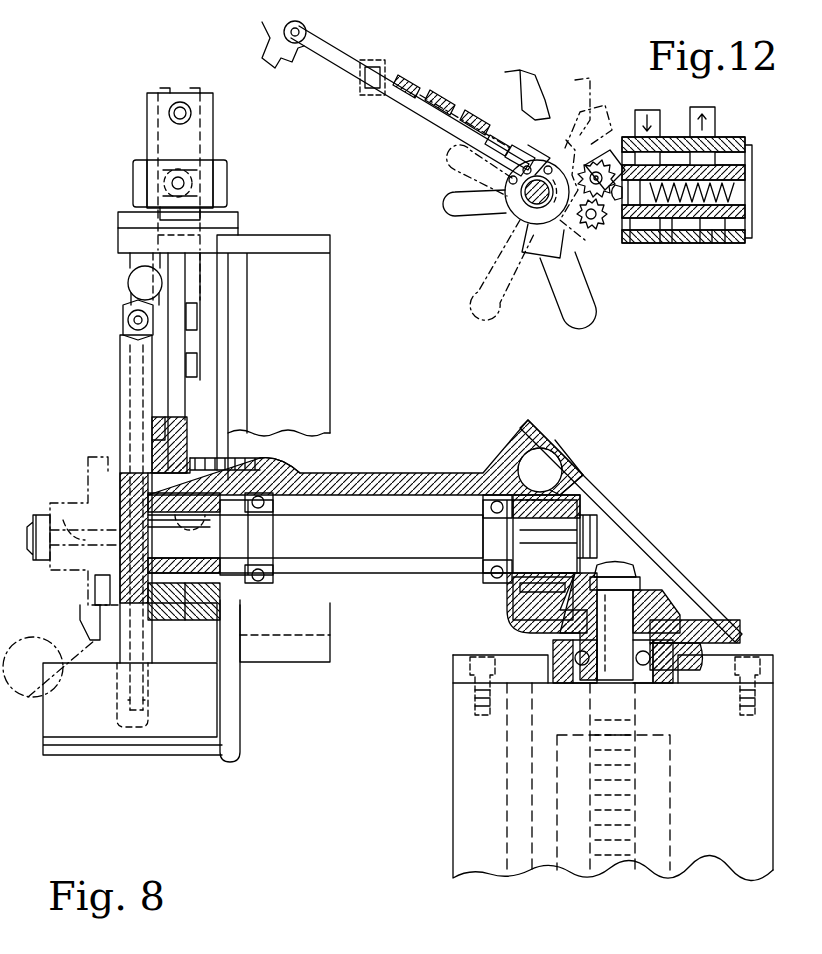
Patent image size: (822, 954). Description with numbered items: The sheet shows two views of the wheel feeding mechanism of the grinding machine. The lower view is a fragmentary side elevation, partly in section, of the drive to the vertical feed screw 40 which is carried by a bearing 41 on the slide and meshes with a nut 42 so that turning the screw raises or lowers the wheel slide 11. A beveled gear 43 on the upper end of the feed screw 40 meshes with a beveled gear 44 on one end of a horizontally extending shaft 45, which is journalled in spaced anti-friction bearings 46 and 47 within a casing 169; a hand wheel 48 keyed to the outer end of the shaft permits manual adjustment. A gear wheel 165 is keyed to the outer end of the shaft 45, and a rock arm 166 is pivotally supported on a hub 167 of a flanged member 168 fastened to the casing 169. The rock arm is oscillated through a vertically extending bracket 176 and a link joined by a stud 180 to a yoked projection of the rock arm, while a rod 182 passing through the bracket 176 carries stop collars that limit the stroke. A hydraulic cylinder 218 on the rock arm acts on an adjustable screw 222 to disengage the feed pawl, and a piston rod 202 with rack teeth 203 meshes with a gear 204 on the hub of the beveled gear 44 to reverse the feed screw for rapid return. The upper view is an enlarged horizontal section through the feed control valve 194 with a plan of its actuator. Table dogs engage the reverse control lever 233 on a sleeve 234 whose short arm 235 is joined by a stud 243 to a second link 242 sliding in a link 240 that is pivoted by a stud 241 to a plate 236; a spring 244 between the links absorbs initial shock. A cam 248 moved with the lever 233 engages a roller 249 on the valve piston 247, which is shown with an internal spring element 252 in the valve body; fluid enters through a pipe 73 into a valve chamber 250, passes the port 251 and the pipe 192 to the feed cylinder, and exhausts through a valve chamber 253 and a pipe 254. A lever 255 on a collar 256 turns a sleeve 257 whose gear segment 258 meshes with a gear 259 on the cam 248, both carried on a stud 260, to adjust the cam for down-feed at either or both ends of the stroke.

In FIG. 8, the wheel slide 11 is at (725, 870).
In FIG. 8, the feed screw 40 is at (635, 722).
In FIG. 8, the bearing 41 is at (568, 680).
In FIG. 8, the nut 42 is at (680, 855).
In FIG. 8, the beveled gear 43 is at (650, 590).
In FIG. 8, the beveled gear 44 is at (578, 500).
In FIG. 8, the shaft 45 is at (440, 522).
In FIG. 8, the anti-friction bearing 46 is at (262, 470).
In FIG. 8, the anti-friction bearing 47 is at (490, 500).
In FIG. 8, the hand wheel 48 is at (88, 490).
In FIG. 8, the gear wheel 165 is at (125, 420).
In FIG. 8, the rock arm 166 is at (170, 400).
In FIG. 8, the hub 167 is at (178, 622).
In FIG. 8, the flanged member 168 is at (212, 640).
In FIG. 8, the casing 169 is at (370, 605).
In FIG. 8, the bracket 176 is at (160, 125).
In FIG. 8, the stud 180 is at (165, 170).
In FIG. 8, the rod 182 is at (180, 102).
In FIG. 8, the piston rod 202 is at (532, 470).
In FIG. 8, the rack teeth 203 is at (518, 495).
In FIG. 8, the gear 204 is at (537, 592).
In FIG. 8, the hydraulic cylinder 218 is at (130, 305).
In FIG. 8, the adjustable screw 222 is at (125, 336).
In FIG. 12, the reverse control lever 233 is at (510, 75).
In FIG. 12, the sleeve 234 is at (520, 205).
In FIG. 12, the short arm 235 is at (545, 152).
In FIG. 12, the plate 236 is at (290, 62).
In FIG. 12, the link 240 is at (345, 68).
In FIG. 12, the stud 241 is at (306, 32).
In FIG. 12, the second link 242 is at (455, 113).
In FIG. 12, the stud 243 is at (498, 140).
In FIG. 12, the spring 244 is at (405, 100).
In FIG. 12, the valve piston 247 is at (746, 172).
In FIG. 12, the cam 248 is at (602, 150).
In FIG. 12, the roller 249 is at (615, 215).
In FIG. 12, the valve chamber 250 is at (635, 240).
In FIG. 12, the port 251 is at (690, 245).
In FIG. 12, the spring 252 is at (740, 200).
In FIG. 12, the valve chamber 253 is at (712, 246).
In FIG. 12, the pipe 254 is at (712, 118).
In FIG. 12, the lever 255 is at (450, 205).
In FIG. 12, the collar 256 is at (505, 190).
In FIG. 12, the sleeve 257 is at (538, 258).
In FIG. 12, the gear segment 258 is at (582, 125).
In FIG. 12, the gear 259 is at (594, 162).
In FIG. 12, the stud 260 is at (585, 130).
In FIG. 12, the pipe 73 is at (645, 125).
In FIG. 12, the pipe 192 is at (665, 245).
In FIG. 12, the feed control valve 194 is at (730, 245).